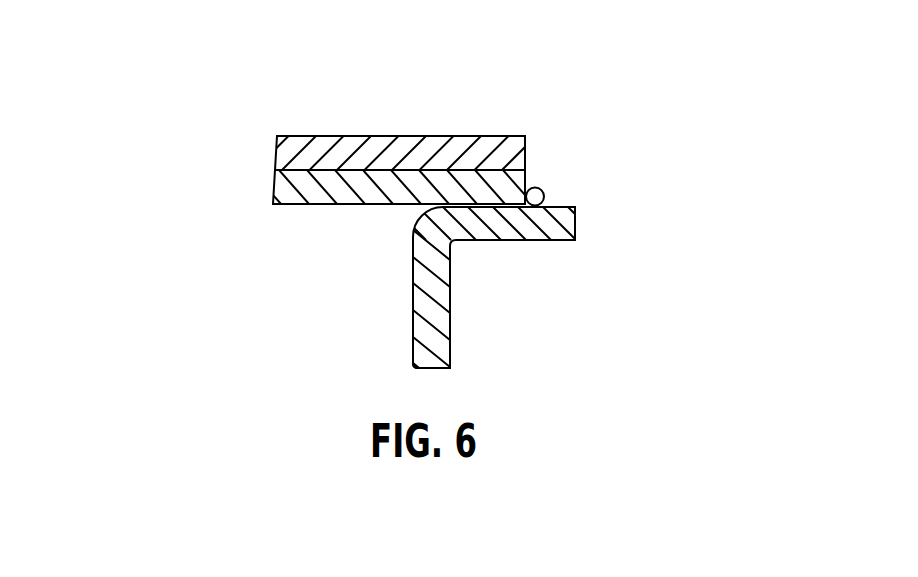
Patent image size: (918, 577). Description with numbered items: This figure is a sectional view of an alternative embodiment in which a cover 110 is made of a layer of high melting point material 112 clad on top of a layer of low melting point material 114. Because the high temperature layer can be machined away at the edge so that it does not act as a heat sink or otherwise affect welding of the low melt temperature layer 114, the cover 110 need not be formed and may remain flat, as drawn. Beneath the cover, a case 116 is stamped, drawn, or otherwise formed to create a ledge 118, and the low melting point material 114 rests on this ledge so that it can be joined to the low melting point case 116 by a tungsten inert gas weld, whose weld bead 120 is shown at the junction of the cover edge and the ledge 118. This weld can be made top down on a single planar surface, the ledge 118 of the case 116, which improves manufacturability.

The cover 110 is at (243, 148).
The layer of high melting point material 112 is at (353, 136).
The layer of low melting point material 114 is at (433, 187).
The case 116 is at (450, 305).
The ledge 118 is at (552, 205).
The weld bead 120 is at (543, 192).